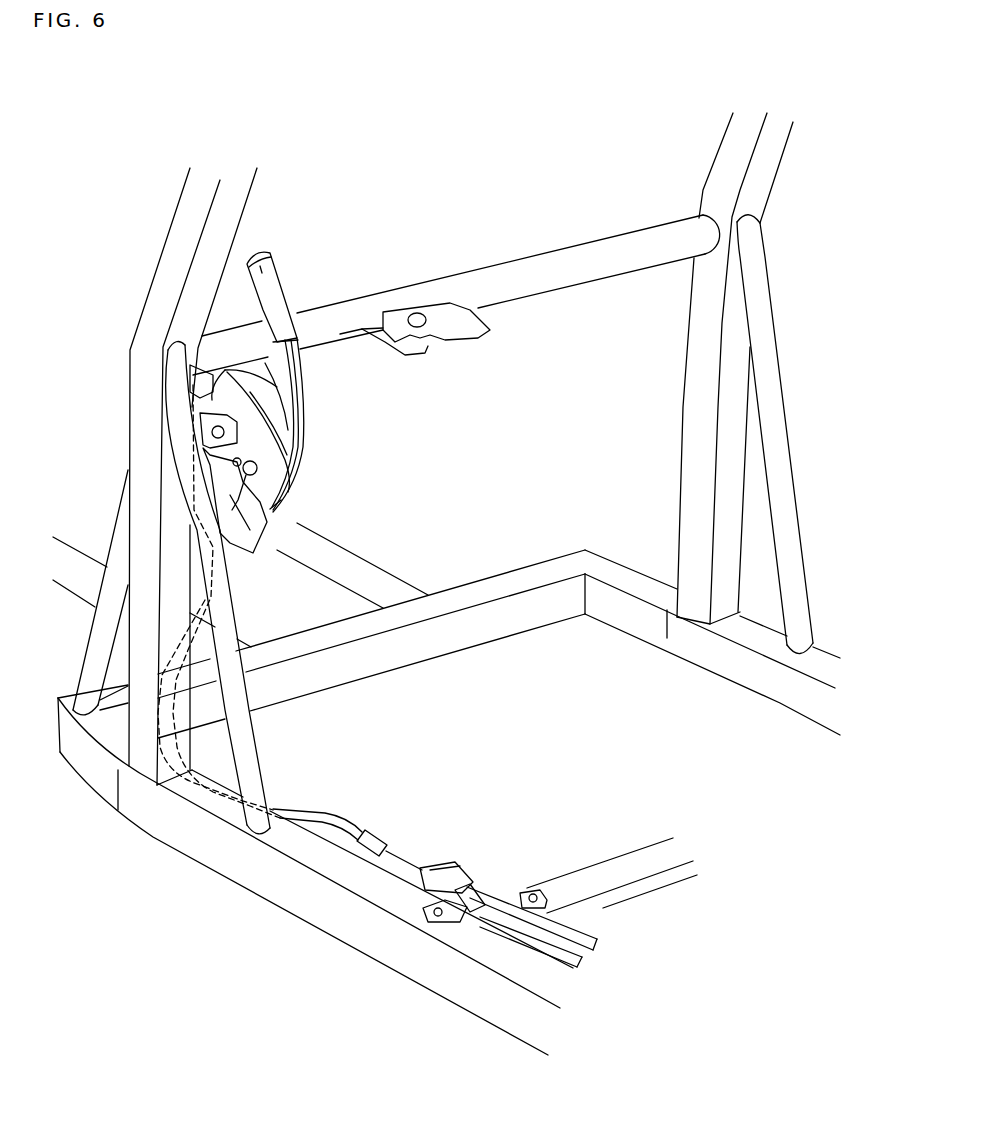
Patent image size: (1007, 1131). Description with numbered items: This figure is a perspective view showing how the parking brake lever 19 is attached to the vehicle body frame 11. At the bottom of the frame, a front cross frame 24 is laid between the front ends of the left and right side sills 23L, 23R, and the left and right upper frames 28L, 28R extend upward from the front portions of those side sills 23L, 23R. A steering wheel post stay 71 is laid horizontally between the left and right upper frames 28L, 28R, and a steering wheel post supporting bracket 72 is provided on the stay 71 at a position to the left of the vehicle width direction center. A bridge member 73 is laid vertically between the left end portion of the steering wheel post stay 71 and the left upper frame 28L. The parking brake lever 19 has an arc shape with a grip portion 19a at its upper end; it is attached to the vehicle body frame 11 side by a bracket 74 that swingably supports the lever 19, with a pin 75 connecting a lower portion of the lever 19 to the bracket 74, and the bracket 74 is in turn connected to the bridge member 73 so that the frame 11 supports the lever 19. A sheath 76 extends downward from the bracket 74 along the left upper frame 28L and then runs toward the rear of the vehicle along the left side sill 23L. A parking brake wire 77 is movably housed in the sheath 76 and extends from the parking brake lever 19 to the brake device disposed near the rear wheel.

The vehicle body frame 11 is at (439, 584).
The parking brake lever 19 is at (337, 358).
The grip portion 19a is at (281, 293).
The left side sill 23L is at (322, 905).
The right side sill 23R is at (753, 678).
The front cross frame 24 is at (417, 652).
The left upper frame 28L is at (137, 468).
The right upper frame 28R is at (738, 423).
The steering wheel post stay 71 is at (527, 270).
The steering wheel post supporting bracket 72 is at (432, 313).
The bridge member 73 is at (200, 406).
The bracket 74 is at (278, 440).
The pin 75 is at (257, 480).
The sheath 76 is at (310, 808).
The parking brake wire 77 is at (407, 855).